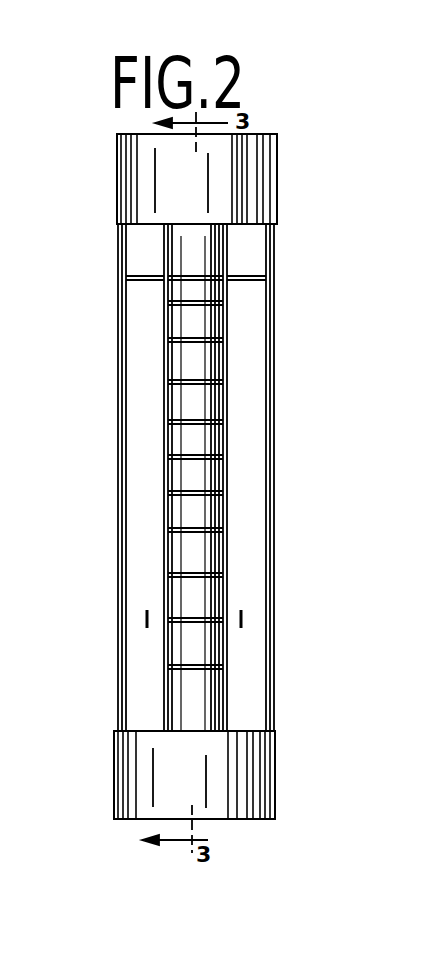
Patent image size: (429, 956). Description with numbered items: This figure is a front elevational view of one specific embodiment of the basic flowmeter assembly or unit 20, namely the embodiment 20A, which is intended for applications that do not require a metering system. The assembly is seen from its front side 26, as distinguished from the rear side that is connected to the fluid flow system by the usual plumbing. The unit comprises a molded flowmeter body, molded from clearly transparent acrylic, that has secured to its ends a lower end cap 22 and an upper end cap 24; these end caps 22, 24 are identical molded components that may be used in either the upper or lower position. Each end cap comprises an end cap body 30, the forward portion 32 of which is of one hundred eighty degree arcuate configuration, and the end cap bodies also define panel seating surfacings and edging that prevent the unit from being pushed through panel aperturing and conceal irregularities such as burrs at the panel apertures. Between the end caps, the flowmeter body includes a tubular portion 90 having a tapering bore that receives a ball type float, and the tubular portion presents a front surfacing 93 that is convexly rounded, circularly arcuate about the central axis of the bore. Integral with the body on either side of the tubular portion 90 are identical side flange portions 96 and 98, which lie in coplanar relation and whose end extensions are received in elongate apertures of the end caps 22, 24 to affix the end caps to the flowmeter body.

The flowmeter assembly or unit 20 is at (314, 124).
The flowmeter assembly embodiment 20A is at (290, 545).
The lower end cap 22 is at (272, 786).
The upper end cap 24 is at (276, 182).
The front side 26 is at (284, 102).
The end cap body 30 is at (250, 476).
The forward portion of end cap body 32 is at (188, 178).
The tubular portion 90 is at (200, 603).
The front surfacing 93 is at (200, 648).
The side flange portion 96 is at (143, 670).
The side flange portion 98 is at (250, 688).